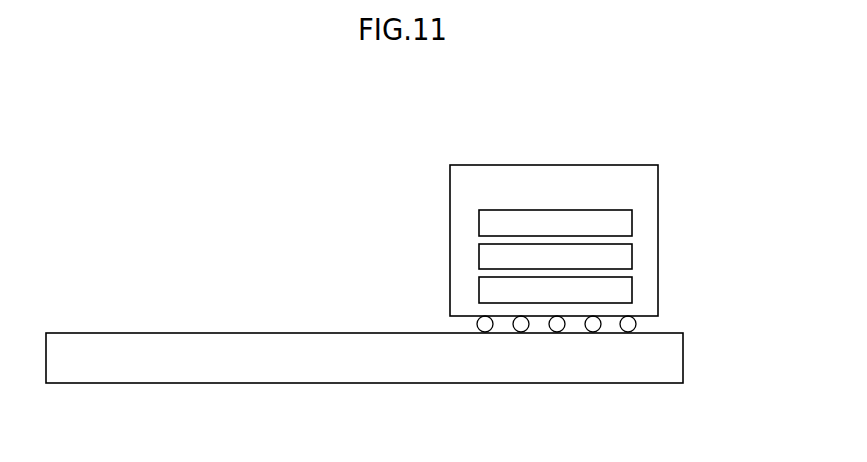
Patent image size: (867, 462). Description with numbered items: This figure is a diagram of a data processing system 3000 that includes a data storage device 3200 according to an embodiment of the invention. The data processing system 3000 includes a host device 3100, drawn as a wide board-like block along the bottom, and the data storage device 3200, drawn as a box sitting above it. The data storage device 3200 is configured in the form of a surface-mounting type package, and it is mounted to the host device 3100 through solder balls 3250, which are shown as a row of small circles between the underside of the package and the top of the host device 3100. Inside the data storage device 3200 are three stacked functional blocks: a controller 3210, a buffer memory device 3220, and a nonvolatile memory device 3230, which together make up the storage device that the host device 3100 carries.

The data processing system 3000 is at (101, 114).
The host device 3100 is at (364, 358).
The data storage device 3200 is at (554, 240).
The controller 3210 is at (555, 223).
The buffer memory device 3220 is at (555, 257).
The nonvolatile memory device 3230 is at (555, 289).
The solder balls 3250 is at (645, 321).